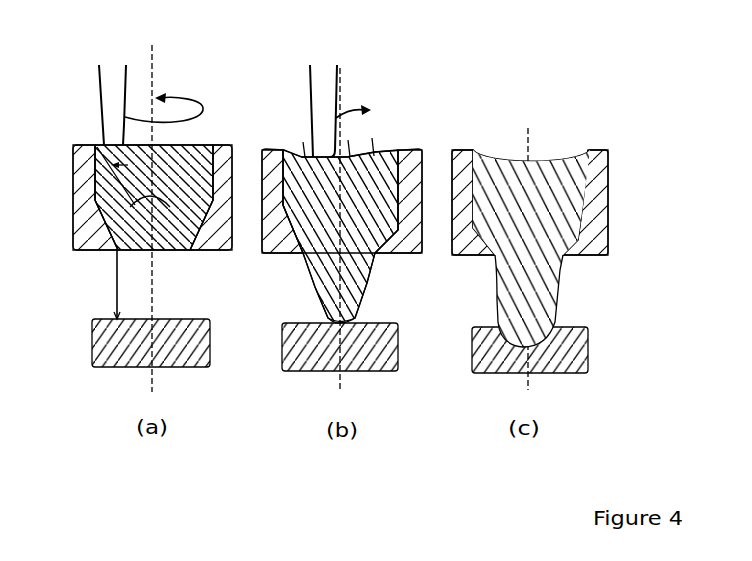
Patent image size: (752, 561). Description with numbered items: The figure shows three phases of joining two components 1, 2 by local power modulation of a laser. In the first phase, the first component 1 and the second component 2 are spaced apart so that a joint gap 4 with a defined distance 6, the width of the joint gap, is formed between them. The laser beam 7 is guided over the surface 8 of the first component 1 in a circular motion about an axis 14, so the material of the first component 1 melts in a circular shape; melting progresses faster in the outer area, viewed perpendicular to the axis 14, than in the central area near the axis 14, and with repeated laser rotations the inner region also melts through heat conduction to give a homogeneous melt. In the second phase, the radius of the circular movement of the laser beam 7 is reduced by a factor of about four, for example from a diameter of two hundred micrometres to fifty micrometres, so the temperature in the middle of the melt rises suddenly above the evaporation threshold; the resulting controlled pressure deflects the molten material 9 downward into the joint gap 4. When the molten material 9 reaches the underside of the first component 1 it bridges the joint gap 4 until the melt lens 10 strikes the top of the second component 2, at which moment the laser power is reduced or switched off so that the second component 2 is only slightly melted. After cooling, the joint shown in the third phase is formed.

The first component 1 is at (74, 170).
The second component 2 is at (90, 342).
The joint gap 4 is at (82, 273).
The defined distance 6 is at (112, 285).
The laser beam 7 is at (112, 113).
The surface 8 is at (187, 145).
The molten material 9 is at (76, 203).
The melt lens 10 is at (378, 262).
The axis 14 is at (155, 63).